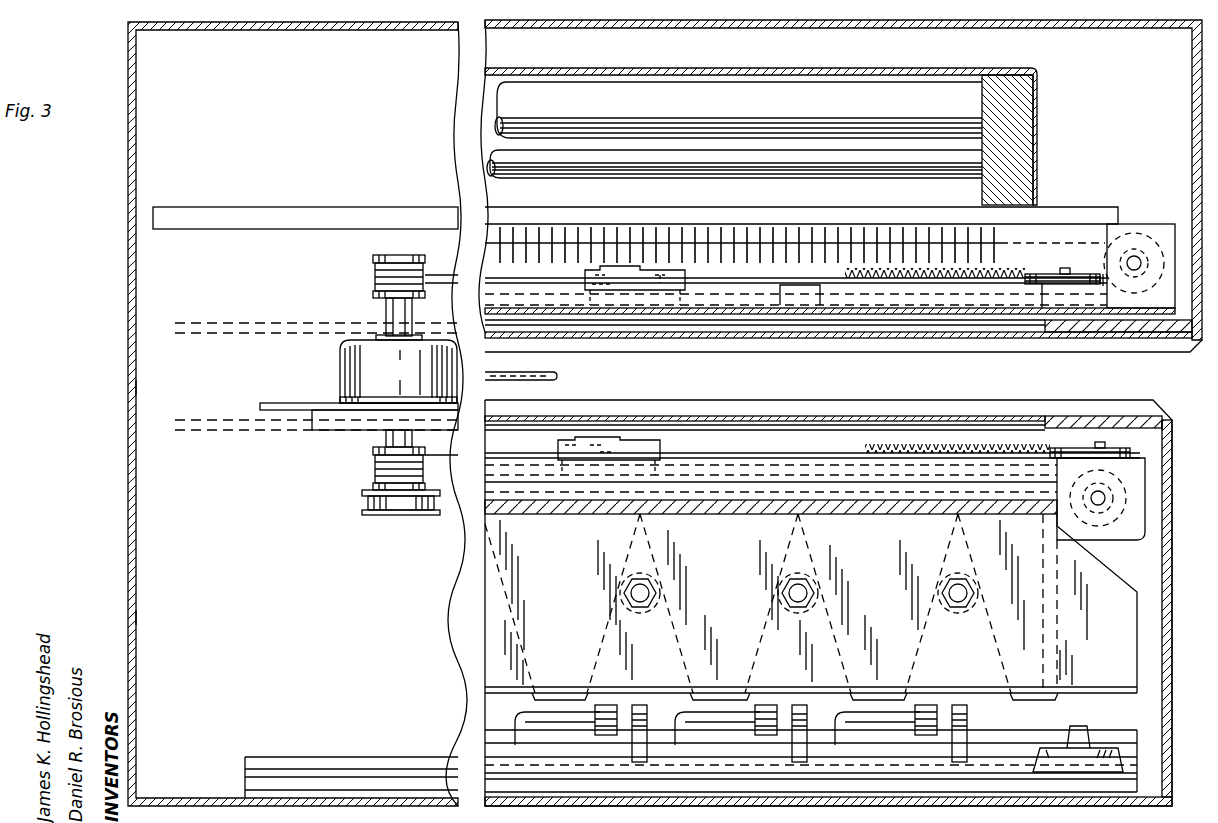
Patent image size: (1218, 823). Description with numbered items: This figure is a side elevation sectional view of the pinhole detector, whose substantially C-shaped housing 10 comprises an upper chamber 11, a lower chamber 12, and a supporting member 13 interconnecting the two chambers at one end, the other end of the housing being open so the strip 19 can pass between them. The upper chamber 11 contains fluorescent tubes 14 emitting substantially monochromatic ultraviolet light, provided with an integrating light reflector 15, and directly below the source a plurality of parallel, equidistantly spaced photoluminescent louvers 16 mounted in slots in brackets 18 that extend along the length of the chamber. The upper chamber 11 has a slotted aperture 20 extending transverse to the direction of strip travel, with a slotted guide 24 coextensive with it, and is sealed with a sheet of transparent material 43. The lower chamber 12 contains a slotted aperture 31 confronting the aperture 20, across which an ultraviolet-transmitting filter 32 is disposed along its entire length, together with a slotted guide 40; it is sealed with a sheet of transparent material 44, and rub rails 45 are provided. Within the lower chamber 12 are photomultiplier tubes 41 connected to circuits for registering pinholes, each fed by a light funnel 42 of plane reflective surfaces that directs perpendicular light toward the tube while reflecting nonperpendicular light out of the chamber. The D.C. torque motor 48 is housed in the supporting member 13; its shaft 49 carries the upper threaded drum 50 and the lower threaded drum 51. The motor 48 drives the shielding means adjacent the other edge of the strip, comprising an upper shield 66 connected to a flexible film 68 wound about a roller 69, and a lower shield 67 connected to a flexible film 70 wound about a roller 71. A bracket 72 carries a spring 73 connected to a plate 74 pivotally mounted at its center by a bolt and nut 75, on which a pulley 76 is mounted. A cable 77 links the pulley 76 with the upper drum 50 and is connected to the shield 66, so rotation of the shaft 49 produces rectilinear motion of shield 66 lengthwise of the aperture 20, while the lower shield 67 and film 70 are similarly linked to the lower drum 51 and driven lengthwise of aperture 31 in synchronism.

The housing 10 is at (85, 344).
The upper chamber 11 is at (128, 189).
The lower chamber 12 is at (130, 616).
The supporting member 13 is at (136, 387).
The fluorescent tubes 14 is at (997, 135).
The integrating light reflector 15 is at (972, 68).
The photoluminescent louvers 16 is at (997, 244).
The brackets 18 is at (320, 426).
The strip 19 is at (557, 374).
The slotted aperture 20 is at (803, 360).
The slotted guide 24 is at (497, 298).
The slotted aperture 31 is at (708, 399).
The ultraviolet-transmitting filter 32 is at (742, 492).
The slotted guide 40 is at (497, 471).
The photomultiplier tubes 41 is at (520, 712).
The light funnel 42 is at (811, 607).
The sheet of transparent material 43 is at (942, 336).
The sheet of transparent material 44 is at (943, 400).
The rub rails 45 is at (1043, 346).
The D.C. torque motor 48 is at (398, 369).
The shaft 49 is at (386, 308).
The upper threaded drum 50 is at (373, 268).
The lower threaded drum 51 is at (373, 468).
The upper shield 66 is at (631, 291).
The lower shield 67 is at (663, 452).
The flexible film 68 is at (735, 297).
The roller 69 is at (1140, 232).
The flexible film 70 is at (773, 471).
The roller 71 is at (1104, 540).
The bracket 72 is at (800, 283).
The spring 73 is at (845, 272).
The plate 74 is at (1099, 278).
The bolt and nut 75 is at (1067, 268).
The pulley 76 is at (1046, 276).
The cable 77 is at (728, 281).